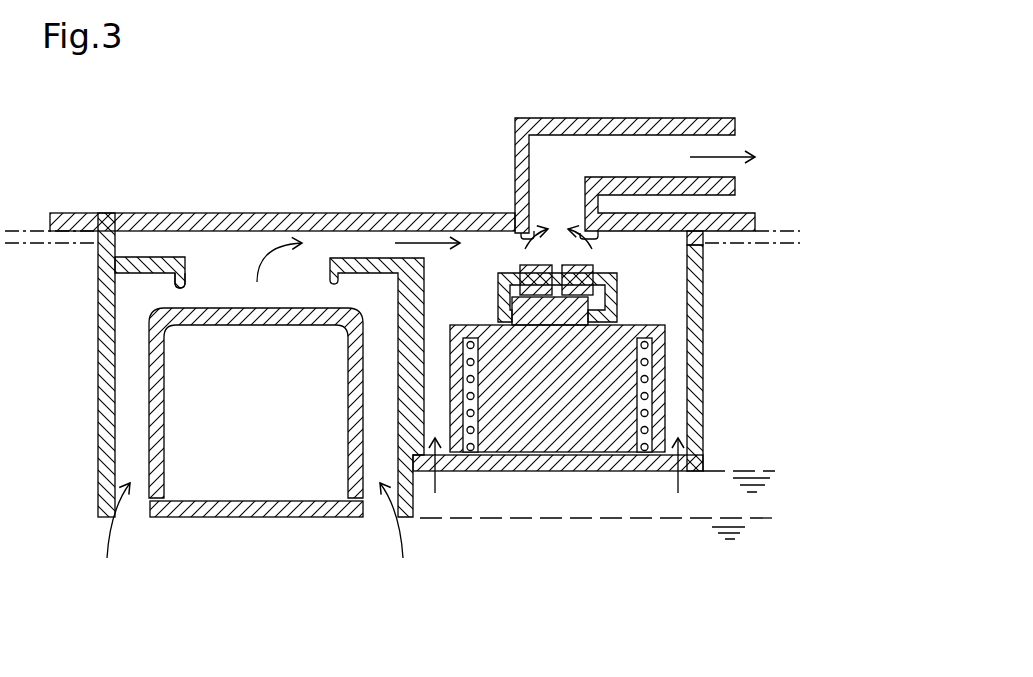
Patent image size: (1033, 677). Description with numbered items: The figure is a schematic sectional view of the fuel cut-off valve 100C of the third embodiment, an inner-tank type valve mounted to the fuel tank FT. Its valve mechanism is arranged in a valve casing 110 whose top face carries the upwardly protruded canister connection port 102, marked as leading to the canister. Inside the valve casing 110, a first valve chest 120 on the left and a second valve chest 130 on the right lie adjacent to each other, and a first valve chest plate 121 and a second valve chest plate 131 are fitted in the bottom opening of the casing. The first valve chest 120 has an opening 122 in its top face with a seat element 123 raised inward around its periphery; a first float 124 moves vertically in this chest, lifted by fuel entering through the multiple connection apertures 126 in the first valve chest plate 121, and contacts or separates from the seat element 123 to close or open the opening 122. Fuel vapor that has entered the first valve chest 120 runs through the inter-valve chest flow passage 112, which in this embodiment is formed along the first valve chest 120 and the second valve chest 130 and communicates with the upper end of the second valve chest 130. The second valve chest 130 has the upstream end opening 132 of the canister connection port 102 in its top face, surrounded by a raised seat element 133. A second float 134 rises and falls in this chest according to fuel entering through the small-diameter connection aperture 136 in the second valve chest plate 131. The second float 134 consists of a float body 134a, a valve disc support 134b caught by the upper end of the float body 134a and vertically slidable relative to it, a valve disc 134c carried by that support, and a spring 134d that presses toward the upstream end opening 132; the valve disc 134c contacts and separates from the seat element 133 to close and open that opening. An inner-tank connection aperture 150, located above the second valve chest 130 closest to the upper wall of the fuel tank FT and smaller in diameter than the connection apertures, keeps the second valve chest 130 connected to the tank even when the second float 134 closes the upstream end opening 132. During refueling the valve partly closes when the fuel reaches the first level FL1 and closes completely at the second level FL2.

The fuel cut-off valve 100C is at (256, 130).
The canister connection port 102 is at (656, 118).
The valve casing 110 is at (332, 212).
The inter-valve chest flow passage 112 is at (386, 255).
The first valve chest 120 is at (128, 378).
The first valve chest plate 121 is at (243, 517).
The opening 122 is at (188, 264).
The seat element 123 is at (182, 282).
The first float 124 is at (155, 435).
The connection apertures 126 is at (135, 513).
The second valve chest 130 is at (678, 381).
The second valve chest plate 131 is at (553, 466).
The upstream end opening 132 is at (536, 229).
The seat element 133 is at (527, 237).
The second float 134 is at (672, 356).
The float body 134a is at (657, 452).
The valve disc support 134b is at (617, 300).
The valve disc 134c is at (520, 268).
The spring 134d is at (472, 452).
The connection aperture 136 is at (440, 474).
The inner-tank connection aperture 150 is at (707, 248).
The fuel tank FT is at (53, 245).
The first level FL1 is at (777, 516).
The second level FL2 is at (775, 468).